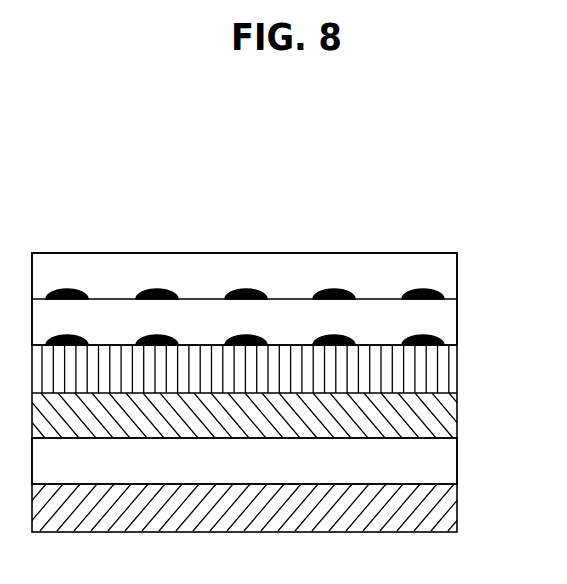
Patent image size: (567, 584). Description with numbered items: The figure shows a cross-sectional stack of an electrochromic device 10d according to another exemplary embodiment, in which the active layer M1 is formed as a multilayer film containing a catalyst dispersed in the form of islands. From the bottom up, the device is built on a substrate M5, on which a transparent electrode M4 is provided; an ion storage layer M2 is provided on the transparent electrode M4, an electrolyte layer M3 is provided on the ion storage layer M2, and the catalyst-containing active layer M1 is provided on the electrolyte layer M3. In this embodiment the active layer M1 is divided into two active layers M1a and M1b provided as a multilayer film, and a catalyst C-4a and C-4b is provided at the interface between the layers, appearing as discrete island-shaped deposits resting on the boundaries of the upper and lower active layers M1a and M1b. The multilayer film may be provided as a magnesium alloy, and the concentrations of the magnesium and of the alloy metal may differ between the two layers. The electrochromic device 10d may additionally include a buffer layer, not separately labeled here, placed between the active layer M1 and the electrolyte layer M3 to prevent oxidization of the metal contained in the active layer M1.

The electrochromic device 10d is at (52, 203).
The active layer M1 is at (527, 268).
The active layer M1a is at (457, 277).
The active layer M1b is at (457, 322).
The catalyst C-4a is at (153, 289).
The catalyst C-4b is at (340, 340).
The electrolyte layer M3 is at (457, 366).
The ion storage layer M2 is at (457, 413).
The transparent electrode M4 is at (457, 461).
The substrate M5 is at (457, 506).